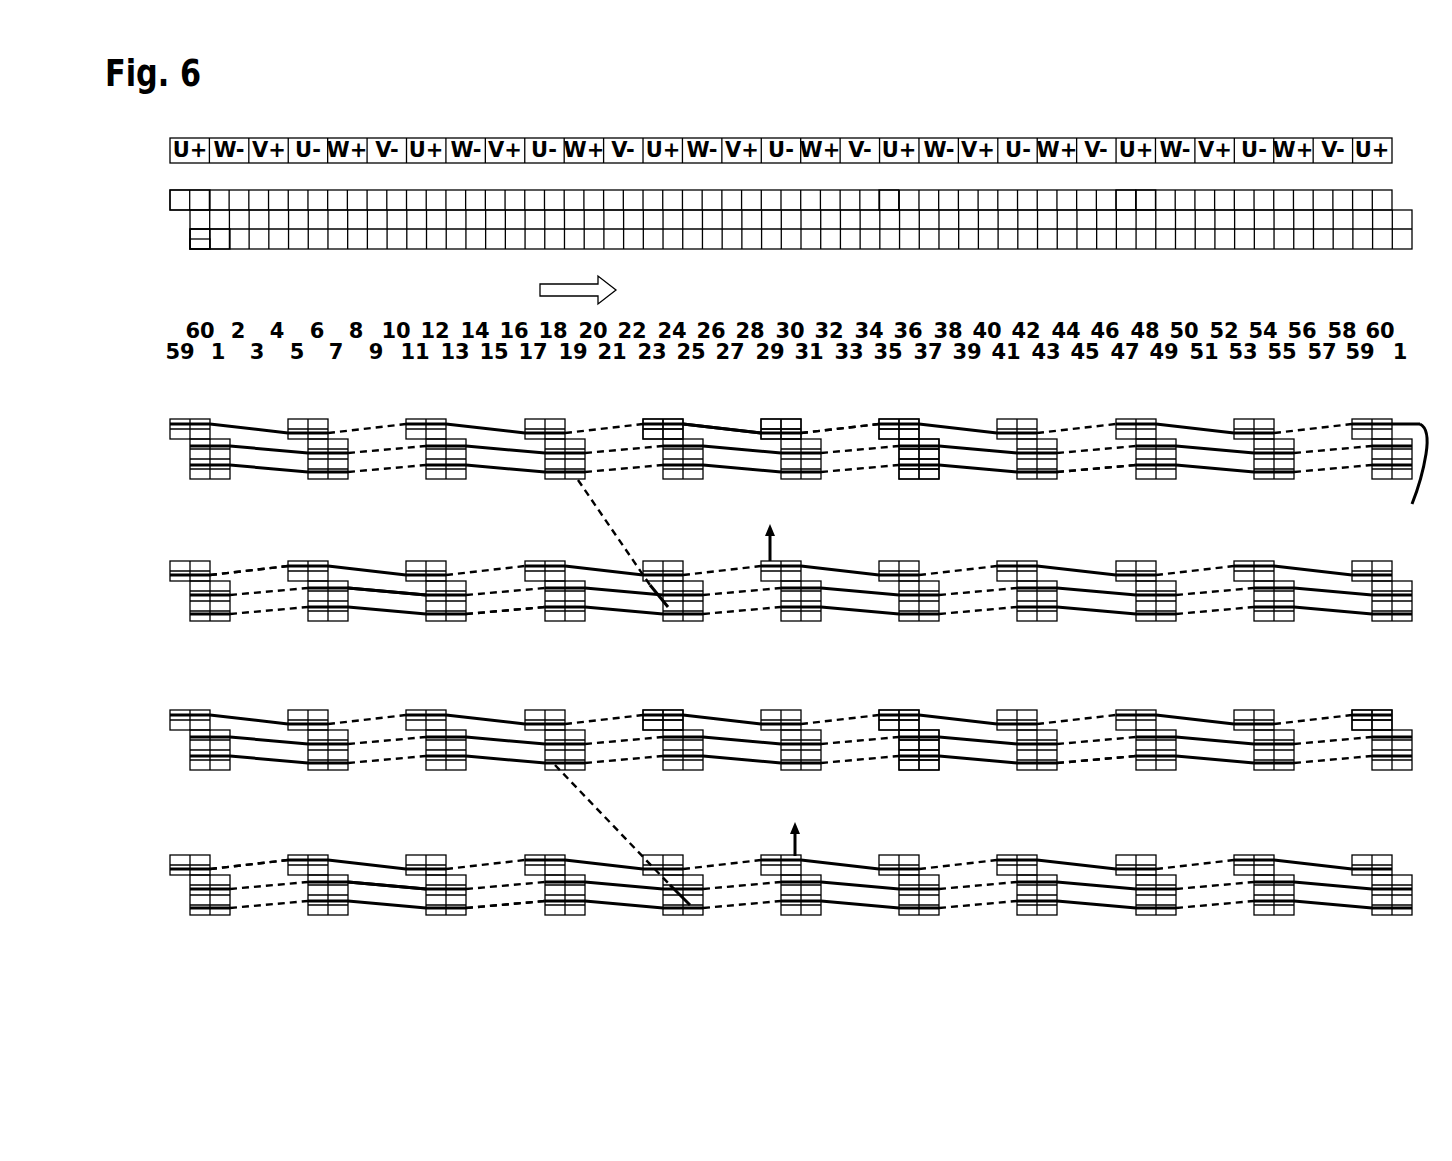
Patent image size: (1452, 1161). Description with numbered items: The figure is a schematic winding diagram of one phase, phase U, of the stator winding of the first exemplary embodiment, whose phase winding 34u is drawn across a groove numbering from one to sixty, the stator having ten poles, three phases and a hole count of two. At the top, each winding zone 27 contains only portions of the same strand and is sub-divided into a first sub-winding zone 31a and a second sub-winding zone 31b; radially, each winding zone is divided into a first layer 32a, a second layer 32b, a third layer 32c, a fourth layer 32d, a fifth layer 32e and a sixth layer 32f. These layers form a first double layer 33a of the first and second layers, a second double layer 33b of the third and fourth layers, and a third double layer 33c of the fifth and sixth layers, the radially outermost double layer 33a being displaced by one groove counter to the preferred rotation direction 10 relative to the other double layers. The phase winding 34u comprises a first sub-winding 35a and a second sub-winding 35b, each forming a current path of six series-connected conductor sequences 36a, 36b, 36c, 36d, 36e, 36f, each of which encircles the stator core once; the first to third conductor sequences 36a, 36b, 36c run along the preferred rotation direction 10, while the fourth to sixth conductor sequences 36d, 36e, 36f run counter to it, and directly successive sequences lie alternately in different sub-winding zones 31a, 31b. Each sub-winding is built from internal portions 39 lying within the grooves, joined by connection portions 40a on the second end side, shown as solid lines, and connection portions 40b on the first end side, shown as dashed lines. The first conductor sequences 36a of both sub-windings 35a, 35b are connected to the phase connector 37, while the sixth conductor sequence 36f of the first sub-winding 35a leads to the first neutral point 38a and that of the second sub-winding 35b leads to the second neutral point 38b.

The preferred rotation direction 10 is at (540, 290).
The winding zone 27 is at (888, 185).
The first sub-winding zone 31a is at (1124, 185).
The second sub-winding zone 31b is at (1140, 185).
The first layer 32a is at (168, 191).
The second layer 32b is at (164, 197).
The third layer 32c is at (188, 216).
The fourth layer 32d is at (188, 233).
The fifth layer 32e is at (188, 246).
The sixth layer 32f is at (190, 253).
The first double layer 33a is at (750, 429).
The second double layer 33b is at (760, 591).
The third double layer 33c is at (760, 460).
The phase winding 34u is at (1334, 403).
The first sub-winding 35a is at (1412, 478).
The second sub-winding 35b is at (1403, 716).
The first conductor sequence 36a is at (885, 406).
The second conductor sequence 36b is at (972, 444).
The third conductor sequence 36c is at (1075, 466).
The fourth conductor sequence 36d is at (510, 617).
The fifth conductor sequence 36e is at (388, 600).
The sixth conductor sequence 36f is at (273, 580).
The phase connector 37 is at (672, 412).
The first neutral point 38a is at (782, 546).
The second neutral point 38b is at (780, 841).
The internal portion 39 is at (787, 424).
The connection portion on the second end side 40a is at (720, 426).
The connection portion on the first end side 40b is at (855, 426).